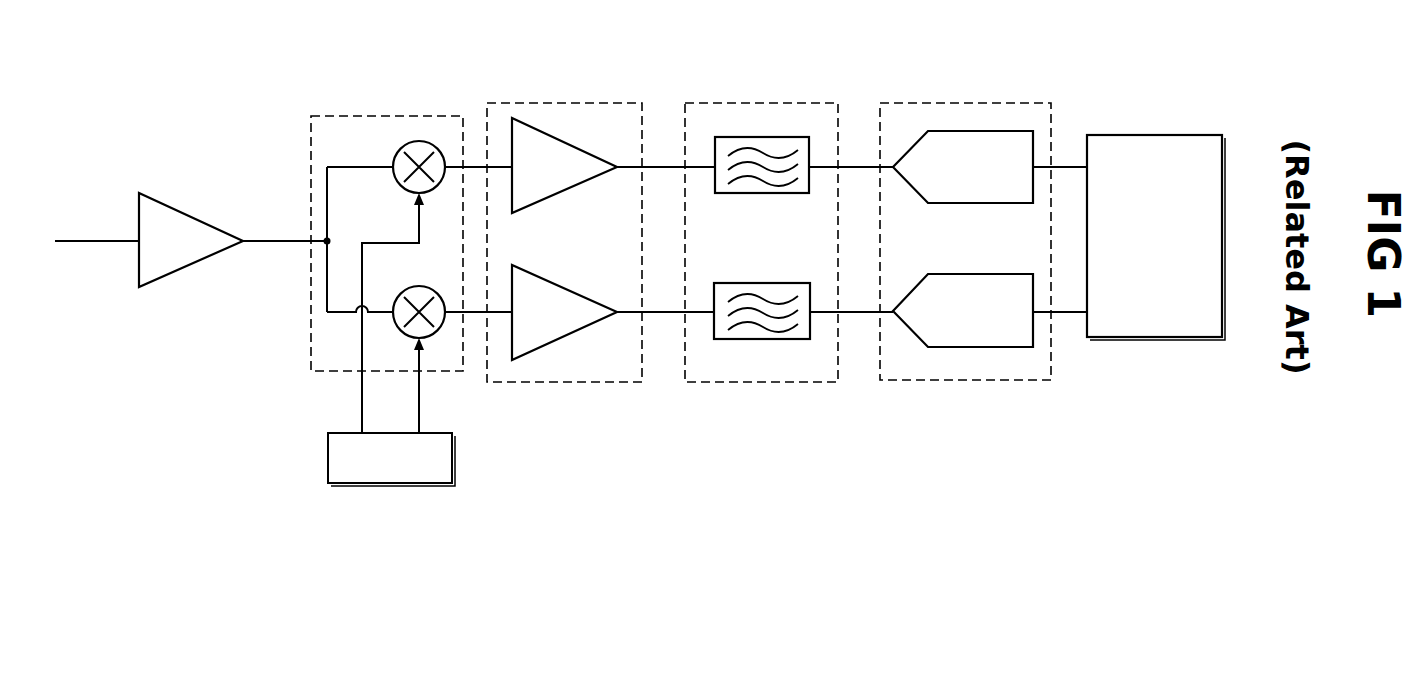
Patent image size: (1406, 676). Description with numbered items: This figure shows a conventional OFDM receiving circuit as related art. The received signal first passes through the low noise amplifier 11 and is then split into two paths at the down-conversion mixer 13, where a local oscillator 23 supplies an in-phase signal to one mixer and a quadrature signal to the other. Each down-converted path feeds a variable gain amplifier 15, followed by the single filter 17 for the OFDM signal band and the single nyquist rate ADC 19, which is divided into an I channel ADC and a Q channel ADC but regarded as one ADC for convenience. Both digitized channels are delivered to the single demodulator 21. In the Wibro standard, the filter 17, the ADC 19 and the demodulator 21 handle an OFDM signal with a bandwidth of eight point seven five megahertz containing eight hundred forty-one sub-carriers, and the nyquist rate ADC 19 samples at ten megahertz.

The low noise amplifier 11 is at (192, 216).
The down-conversion mixer 13 is at (383, 113).
The variable gain amplifier 15 is at (562, 100).
The filter 17 is at (760, 100).
The nyquist rate ADC 19 is at (963, 100).
The demodulator 21 is at (1148, 133).
The local oscillator 23 is at (455, 461).